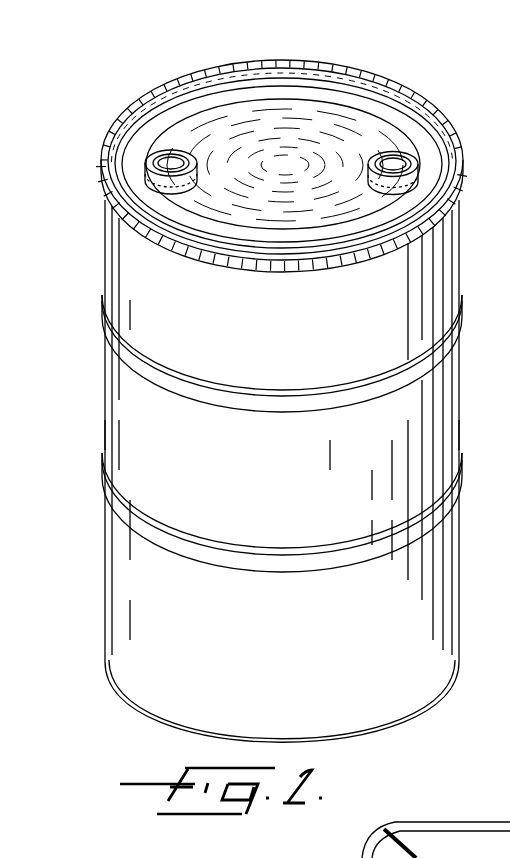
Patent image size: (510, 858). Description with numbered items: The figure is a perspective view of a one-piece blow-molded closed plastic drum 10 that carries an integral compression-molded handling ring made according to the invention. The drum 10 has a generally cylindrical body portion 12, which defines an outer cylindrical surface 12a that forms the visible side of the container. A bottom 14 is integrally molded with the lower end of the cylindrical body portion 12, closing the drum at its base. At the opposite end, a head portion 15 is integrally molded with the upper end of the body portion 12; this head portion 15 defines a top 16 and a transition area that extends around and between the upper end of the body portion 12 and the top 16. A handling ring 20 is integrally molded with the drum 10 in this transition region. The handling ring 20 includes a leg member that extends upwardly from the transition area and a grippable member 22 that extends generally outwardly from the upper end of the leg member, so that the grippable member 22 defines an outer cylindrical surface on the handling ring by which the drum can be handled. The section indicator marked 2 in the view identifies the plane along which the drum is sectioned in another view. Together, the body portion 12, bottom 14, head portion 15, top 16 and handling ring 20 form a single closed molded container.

The one-piece blow-molded closed plastic drum 10 is at (276, 342).
The cylindrical body portion 12 is at (249, 430).
The outer cylindrical surface 12a is at (282, 451).
The bottom 14 is at (271, 709).
The head portion 15 is at (301, 152).
The top 16 is at (282, 164).
The handling ring 20 is at (254, 222).
The grippable member 22 is at (306, 494).
The section line 2- 2 is at (282, 208).